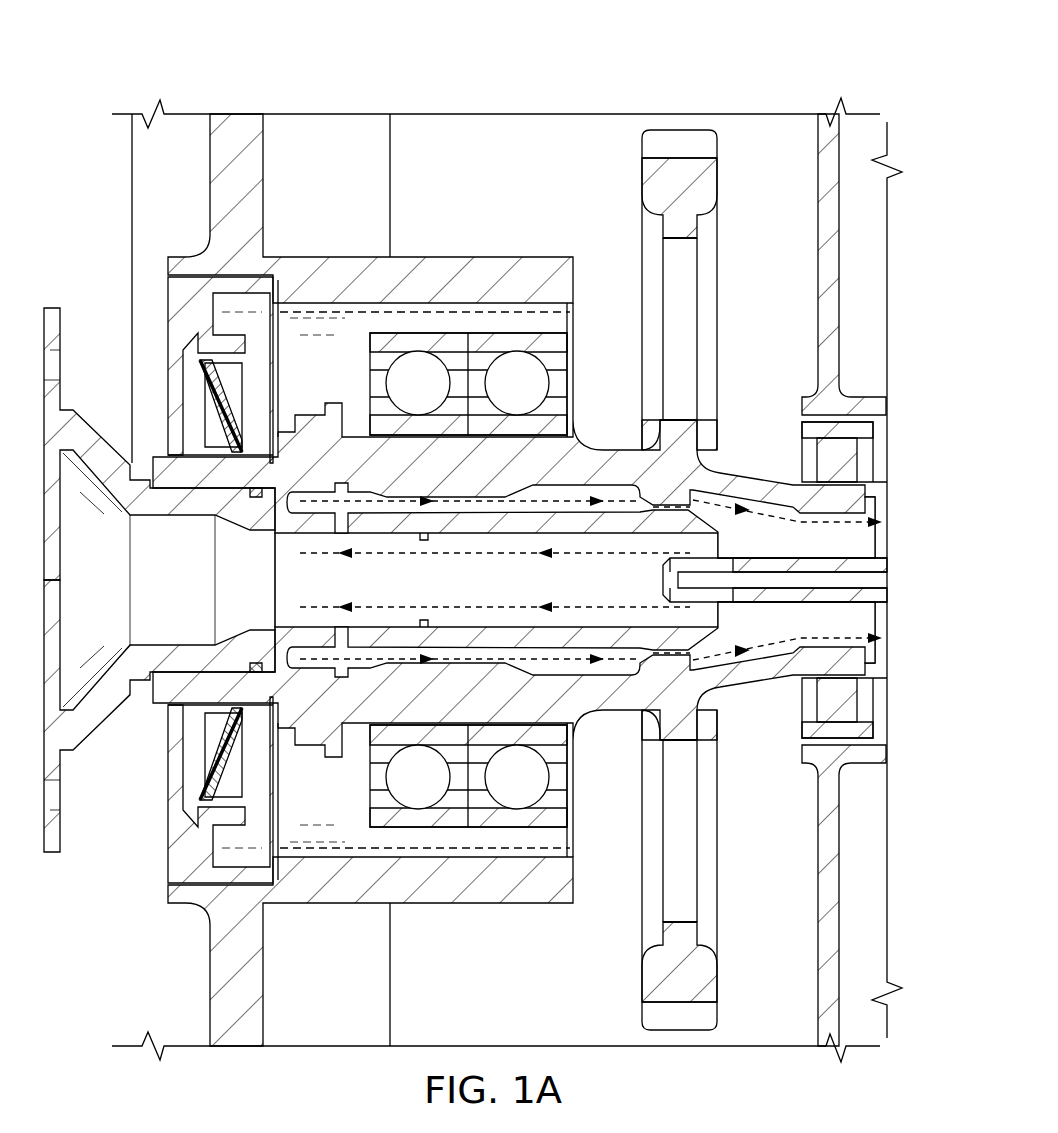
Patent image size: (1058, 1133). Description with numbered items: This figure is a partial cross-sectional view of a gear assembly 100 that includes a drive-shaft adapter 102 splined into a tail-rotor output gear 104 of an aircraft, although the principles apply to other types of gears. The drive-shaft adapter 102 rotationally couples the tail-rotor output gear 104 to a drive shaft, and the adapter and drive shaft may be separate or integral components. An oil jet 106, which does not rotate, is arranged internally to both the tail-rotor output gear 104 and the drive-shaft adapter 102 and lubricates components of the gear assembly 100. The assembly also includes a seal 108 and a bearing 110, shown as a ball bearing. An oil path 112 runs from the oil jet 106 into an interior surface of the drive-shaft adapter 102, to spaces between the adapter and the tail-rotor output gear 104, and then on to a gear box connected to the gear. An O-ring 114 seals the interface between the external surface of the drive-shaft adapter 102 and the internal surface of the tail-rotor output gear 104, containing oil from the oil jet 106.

The gear assembly 100 is at (313, 60).
The drive-shaft adapter 102 is at (50, 833).
The tail-rotor output gear 104 is at (740, 480).
The oil jet 106 is at (862, 565).
The seal 108 is at (208, 393).
The bearing 110 is at (536, 815).
The oil path 112 is at (730, 668).
The O-ring 114 is at (258, 670).